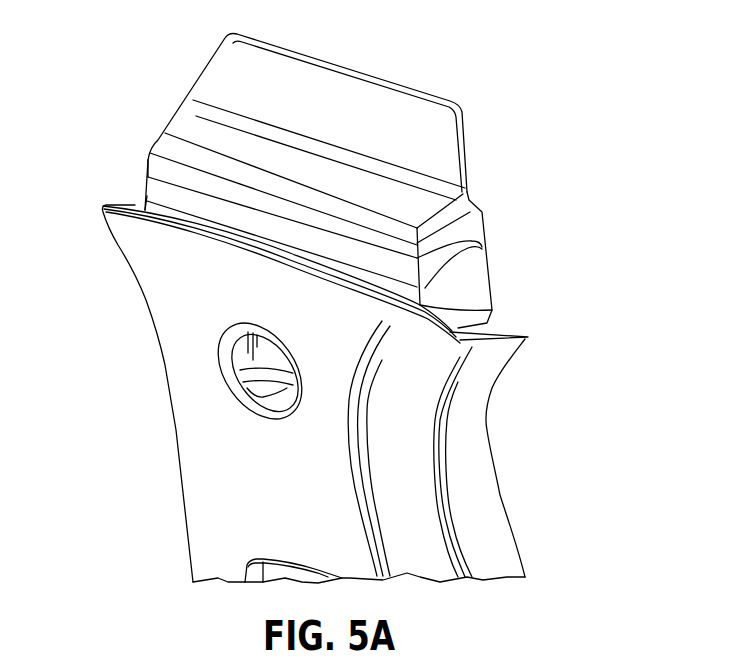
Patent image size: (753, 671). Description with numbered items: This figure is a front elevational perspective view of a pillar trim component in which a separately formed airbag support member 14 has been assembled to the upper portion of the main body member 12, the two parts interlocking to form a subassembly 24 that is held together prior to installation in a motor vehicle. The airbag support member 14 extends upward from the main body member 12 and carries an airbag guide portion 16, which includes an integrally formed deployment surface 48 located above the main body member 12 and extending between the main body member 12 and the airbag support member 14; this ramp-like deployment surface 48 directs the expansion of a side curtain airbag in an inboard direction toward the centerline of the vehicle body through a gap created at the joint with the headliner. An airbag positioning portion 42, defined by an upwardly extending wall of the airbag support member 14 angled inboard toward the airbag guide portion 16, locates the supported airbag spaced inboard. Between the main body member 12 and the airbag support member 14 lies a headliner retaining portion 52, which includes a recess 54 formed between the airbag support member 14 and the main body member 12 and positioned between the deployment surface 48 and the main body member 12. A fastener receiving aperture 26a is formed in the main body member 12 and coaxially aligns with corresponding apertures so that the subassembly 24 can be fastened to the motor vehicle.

The main body member 12 is at (558, 460).
The airbag support member 14 is at (519, 163).
The airbag guide portion 16 is at (190, 133).
The subassembly 24 is at (574, 272).
The fastener receiving aperture 26a is at (246, 395).
The airbag positioning portion 42 is at (335, 60).
The deployment surface 48 is at (142, 208).
The headliner retaining portion 52 is at (124, 178).
The recess 54 is at (133, 207).